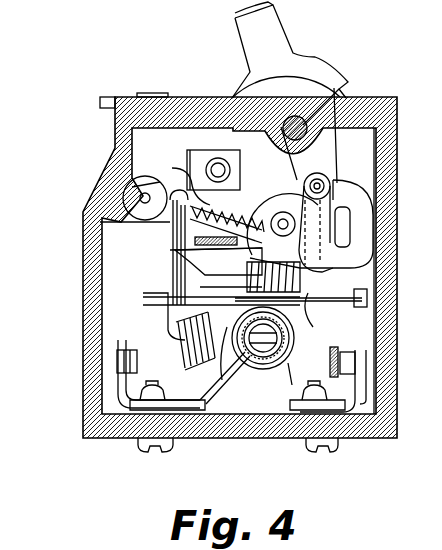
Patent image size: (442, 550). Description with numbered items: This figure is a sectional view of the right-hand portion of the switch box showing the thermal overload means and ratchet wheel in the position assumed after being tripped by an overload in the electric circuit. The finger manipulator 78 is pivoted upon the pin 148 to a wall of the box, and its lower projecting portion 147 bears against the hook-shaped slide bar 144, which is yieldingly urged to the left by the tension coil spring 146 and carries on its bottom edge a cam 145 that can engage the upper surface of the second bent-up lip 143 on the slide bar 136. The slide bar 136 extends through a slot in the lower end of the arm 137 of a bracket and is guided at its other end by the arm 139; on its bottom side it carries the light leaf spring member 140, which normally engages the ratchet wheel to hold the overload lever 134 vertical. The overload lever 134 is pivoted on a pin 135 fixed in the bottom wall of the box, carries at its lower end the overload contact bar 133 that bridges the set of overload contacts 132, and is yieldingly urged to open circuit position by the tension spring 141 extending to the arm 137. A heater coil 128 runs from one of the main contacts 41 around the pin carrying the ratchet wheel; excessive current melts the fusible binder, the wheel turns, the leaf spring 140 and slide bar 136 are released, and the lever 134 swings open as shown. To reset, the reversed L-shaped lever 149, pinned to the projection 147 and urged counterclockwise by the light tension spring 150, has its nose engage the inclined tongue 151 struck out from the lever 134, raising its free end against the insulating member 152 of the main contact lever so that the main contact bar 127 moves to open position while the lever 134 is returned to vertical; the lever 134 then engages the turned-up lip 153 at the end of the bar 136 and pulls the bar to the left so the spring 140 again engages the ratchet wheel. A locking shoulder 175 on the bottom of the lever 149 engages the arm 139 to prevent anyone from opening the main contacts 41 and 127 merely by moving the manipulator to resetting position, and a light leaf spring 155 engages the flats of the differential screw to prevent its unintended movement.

The finger manipulator 78 is at (272, 30).
The pin 148 is at (346, 98).
The light leaf spring 155 is at (190, 162).
The tension coil spring 146 is at (180, 180).
The second bent-up lip or tongue 143 is at (282, 186).
The lower projecting portion 147 is at (318, 172).
The reversed L-shaped lever 149 is at (345, 198).
The hook-shaped slide bar 144 is at (360, 210).
The pin 135 is at (130, 194).
The arm 139 is at (232, 222).
The lip or tongue 151 is at (165, 254).
The insulating member 152 is at (216, 252).
The locking shoulder 175 is at (250, 262).
The light tension spring 150 is at (303, 231).
The cam 145 is at (221, 293).
The tension spring 141 is at (306, 281).
The overload lever 134 is at (148, 258).
The arm 137 is at (326, 310).
The slide bar 136 is at (362, 297).
The turned-up lip 153 is at (430, 313).
The overload contact bar 133 is at (185, 365).
The light leaf spring member 140 is at (195, 345).
The heater coil 128 is at (284, 375).
The contact bar 127 is at (330, 372).
The overload contacts 132 is at (120, 366).
The contacts 41 is at (366, 366).